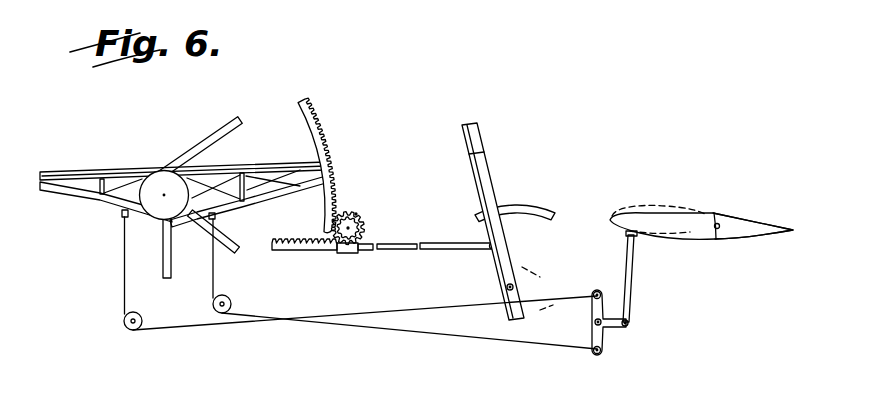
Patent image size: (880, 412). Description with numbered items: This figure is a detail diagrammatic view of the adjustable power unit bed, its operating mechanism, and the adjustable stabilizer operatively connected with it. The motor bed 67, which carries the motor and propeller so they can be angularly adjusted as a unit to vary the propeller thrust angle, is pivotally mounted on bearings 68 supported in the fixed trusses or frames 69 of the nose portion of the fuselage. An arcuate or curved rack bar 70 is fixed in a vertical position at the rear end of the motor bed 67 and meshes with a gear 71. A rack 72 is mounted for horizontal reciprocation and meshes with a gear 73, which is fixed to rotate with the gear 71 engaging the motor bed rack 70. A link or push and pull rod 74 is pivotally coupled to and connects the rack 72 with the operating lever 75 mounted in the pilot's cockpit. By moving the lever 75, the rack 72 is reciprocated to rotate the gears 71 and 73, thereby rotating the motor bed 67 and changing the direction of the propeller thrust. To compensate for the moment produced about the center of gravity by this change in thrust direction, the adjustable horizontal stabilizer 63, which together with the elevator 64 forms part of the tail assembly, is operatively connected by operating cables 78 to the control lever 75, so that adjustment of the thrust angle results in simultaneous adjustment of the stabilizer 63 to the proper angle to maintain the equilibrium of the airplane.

The adjustable horizontal stabilizer 63 is at (668, 222).
The elevator 64 is at (747, 229).
The motor bed 67 is at (83, 173).
The bearings 68 is at (158, 180).
The fixed trusses or frames 69 is at (204, 144).
The arcuate rack bar 70 is at (313, 131).
The gear 71 is at (357, 213).
The rack 72 is at (303, 251).
The gear 73 is at (349, 227).
The push and pull rod 74 is at (398, 246).
The operating lever 75 is at (484, 181).
The operating cables 78 is at (523, 318).